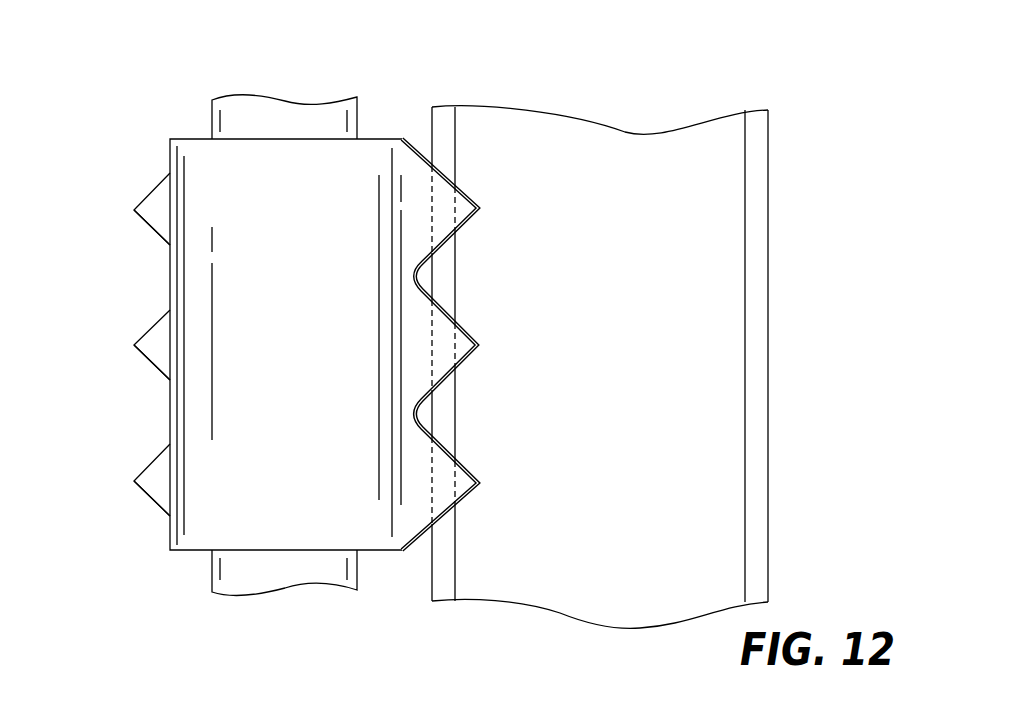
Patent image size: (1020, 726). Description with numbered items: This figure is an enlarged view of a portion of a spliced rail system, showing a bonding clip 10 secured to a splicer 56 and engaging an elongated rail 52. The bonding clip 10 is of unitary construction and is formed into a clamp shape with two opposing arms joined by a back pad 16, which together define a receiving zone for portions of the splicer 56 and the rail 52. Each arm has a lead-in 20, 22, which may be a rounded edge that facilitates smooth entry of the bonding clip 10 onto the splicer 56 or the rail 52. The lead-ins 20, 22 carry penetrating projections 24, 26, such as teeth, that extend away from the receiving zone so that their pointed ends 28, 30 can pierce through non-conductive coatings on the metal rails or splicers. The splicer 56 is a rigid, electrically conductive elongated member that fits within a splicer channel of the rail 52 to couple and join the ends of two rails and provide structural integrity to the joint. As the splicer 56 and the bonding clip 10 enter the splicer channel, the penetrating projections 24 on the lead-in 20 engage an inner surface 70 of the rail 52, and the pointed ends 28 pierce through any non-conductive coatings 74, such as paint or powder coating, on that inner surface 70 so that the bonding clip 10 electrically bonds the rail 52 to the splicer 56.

The bonding clip 10 is at (178, 108).
The back pad 16 is at (264, 336).
The lead-in 20 is at (412, 130).
The lead-in 22 is at (158, 155).
The penetrating projections 24 is at (462, 194).
The penetrating projections 26 is at (152, 228).
The pointed end 28 is at (478, 208).
The pointed end 30 is at (134, 210).
The elongated rail 52 is at (773, 195).
The splicer 56 is at (288, 92).
The inner surface 70 is at (460, 568).
The non-conductive coatings 74 is at (768, 325).